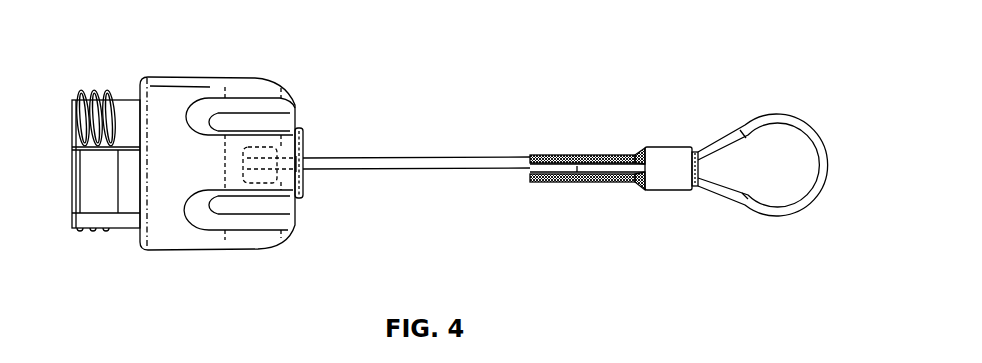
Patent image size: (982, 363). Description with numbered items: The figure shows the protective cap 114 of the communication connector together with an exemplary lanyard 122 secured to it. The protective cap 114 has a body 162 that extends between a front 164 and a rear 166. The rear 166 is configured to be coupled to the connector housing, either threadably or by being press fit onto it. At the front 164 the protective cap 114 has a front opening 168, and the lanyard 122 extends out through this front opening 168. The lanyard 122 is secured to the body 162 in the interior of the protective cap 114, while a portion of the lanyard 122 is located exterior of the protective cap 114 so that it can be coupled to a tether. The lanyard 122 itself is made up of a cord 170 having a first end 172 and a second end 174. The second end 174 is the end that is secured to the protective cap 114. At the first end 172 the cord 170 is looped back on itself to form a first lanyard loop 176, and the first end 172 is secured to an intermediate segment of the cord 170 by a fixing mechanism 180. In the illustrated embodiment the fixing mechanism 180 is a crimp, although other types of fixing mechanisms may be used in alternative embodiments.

The protective cap 114 is at (250, 49).
The lanyard 122 is at (480, 150).
The body 162 is at (188, 238).
The front 164 is at (300, 143).
The rear 166 is at (70, 207).
The front opening 168 is at (301, 158).
The cord 170 is at (428, 163).
The first end 172 is at (823, 121).
The second end 174 is at (238, 164).
The first lanyard loop 176 is at (826, 158).
The fixing mechanism 180 is at (672, 180).